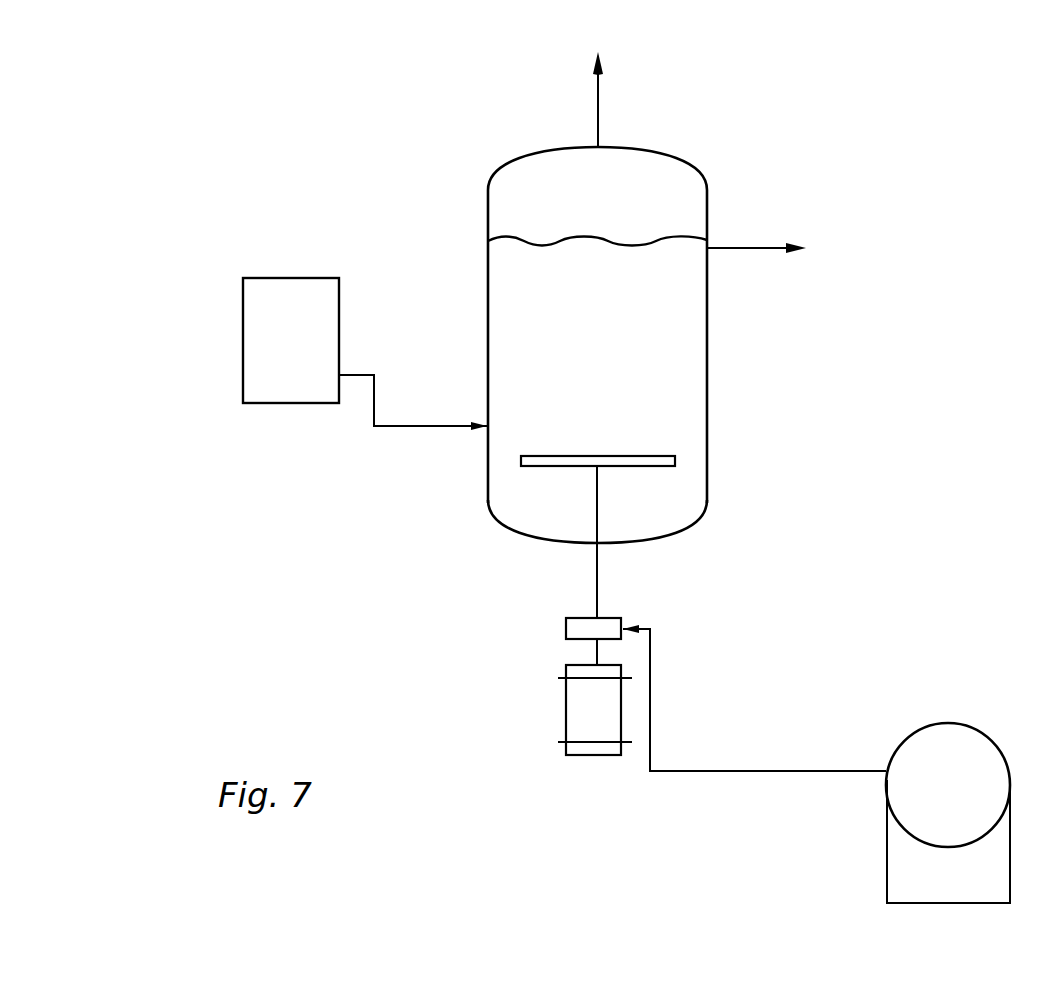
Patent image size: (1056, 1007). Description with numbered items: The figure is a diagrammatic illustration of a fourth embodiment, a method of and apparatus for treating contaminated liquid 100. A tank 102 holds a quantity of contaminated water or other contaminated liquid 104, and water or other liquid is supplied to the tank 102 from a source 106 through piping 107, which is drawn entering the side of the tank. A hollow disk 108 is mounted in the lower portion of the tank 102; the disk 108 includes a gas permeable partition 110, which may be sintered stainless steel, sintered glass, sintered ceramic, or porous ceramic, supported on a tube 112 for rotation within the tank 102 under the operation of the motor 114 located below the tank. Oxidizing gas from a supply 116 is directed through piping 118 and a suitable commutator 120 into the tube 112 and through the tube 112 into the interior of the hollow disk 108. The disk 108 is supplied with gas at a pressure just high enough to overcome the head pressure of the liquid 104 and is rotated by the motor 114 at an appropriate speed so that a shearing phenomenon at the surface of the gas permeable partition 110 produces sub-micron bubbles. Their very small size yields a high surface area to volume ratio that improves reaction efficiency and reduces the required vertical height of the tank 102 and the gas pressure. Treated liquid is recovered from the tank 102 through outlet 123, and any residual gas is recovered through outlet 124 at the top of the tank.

The apparatus for treating contaminated liquid 100 is at (420, 133).
The tank 102 is at (488, 284).
The contaminated liquid 104 is at (590, 315).
The source 106 is at (243, 350).
The piping 107 is at (432, 432).
The hollow disk 108 is at (678, 461).
The gas permeable partition 110 is at (635, 454).
The tube 112 is at (598, 567).
The motor 114 is at (565, 712).
The supply 116 is at (944, 721).
The piping 118 is at (733, 770).
The commutator 120 is at (565, 623).
The outlet 123 is at (746, 246).
The outlet 124 is at (602, 121).